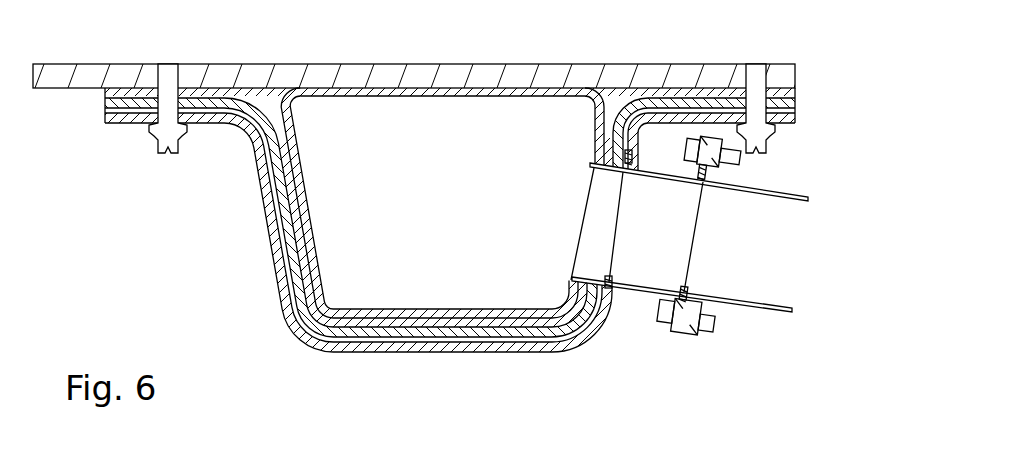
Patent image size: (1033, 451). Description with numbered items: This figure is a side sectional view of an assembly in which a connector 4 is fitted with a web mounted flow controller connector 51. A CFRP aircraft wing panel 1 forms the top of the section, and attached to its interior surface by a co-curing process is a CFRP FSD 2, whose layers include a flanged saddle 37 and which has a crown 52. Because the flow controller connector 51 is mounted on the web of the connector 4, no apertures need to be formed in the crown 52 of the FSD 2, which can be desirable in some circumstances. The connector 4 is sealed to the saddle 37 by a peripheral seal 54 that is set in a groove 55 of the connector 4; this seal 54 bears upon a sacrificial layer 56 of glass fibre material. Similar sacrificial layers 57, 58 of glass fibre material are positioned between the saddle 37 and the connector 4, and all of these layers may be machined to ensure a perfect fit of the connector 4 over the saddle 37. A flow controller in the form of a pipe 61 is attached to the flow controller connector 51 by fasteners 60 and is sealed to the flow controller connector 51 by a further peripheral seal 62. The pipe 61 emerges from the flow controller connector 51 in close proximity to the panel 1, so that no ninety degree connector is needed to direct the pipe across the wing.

The wing panel 1 is at (680, 63).
The FSD 2 is at (278, 267).
The connector 4 is at (280, 303).
The flanged saddle 37 is at (517, 333).
The flow controller connector 51 is at (655, 294).
The crown 52 is at (417, 320).
The peripheral seal 54 is at (348, 342).
The groove 55 is at (593, 165).
The sacrificial layer 56 is at (598, 283).
The sacrificial layer 57 is at (207, 112).
The sacrificial layer 58 is at (779, 125).
The fasteners 60 is at (708, 336).
The pipe 61 is at (773, 312).
The peripheral seal 62 is at (720, 176).